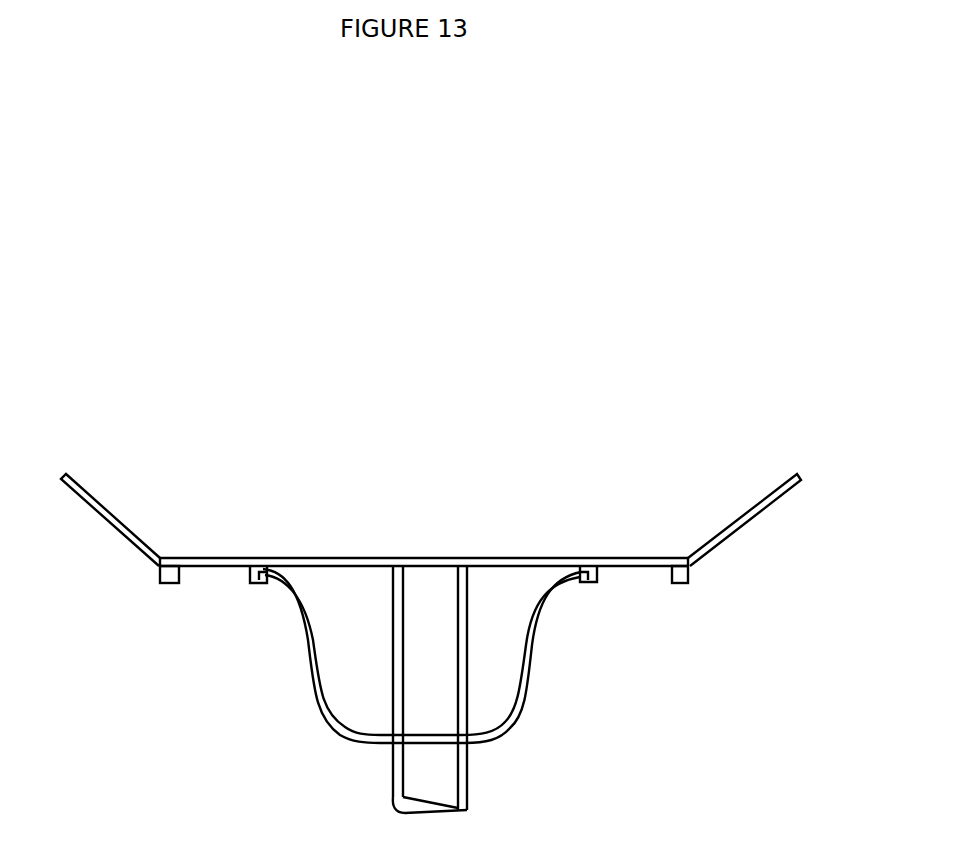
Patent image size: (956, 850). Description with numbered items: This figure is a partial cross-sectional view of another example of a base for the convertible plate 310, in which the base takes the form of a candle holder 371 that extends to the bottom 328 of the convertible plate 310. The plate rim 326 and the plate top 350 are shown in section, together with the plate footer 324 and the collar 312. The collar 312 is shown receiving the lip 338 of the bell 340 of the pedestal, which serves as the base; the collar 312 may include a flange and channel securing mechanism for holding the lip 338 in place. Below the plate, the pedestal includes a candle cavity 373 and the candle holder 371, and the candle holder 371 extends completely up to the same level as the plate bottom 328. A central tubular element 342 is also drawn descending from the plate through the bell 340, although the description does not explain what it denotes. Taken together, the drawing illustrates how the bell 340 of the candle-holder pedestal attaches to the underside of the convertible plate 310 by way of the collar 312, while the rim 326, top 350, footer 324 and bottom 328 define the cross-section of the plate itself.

The convertible plate 310 is at (376, 432).
The collar 312 is at (590, 578).
The plate footer 324 is at (682, 580).
The plate rim 326 is at (722, 538).
The plate bottom 328 is at (228, 567).
The lip 338 is at (585, 573).
The bell 340 is at (522, 713).
The drain pipe 342 is at (445, 768).
The plate top 350 is at (630, 557).
The candle holder 371 is at (393, 713).
The candle cavity 373 is at (420, 725).